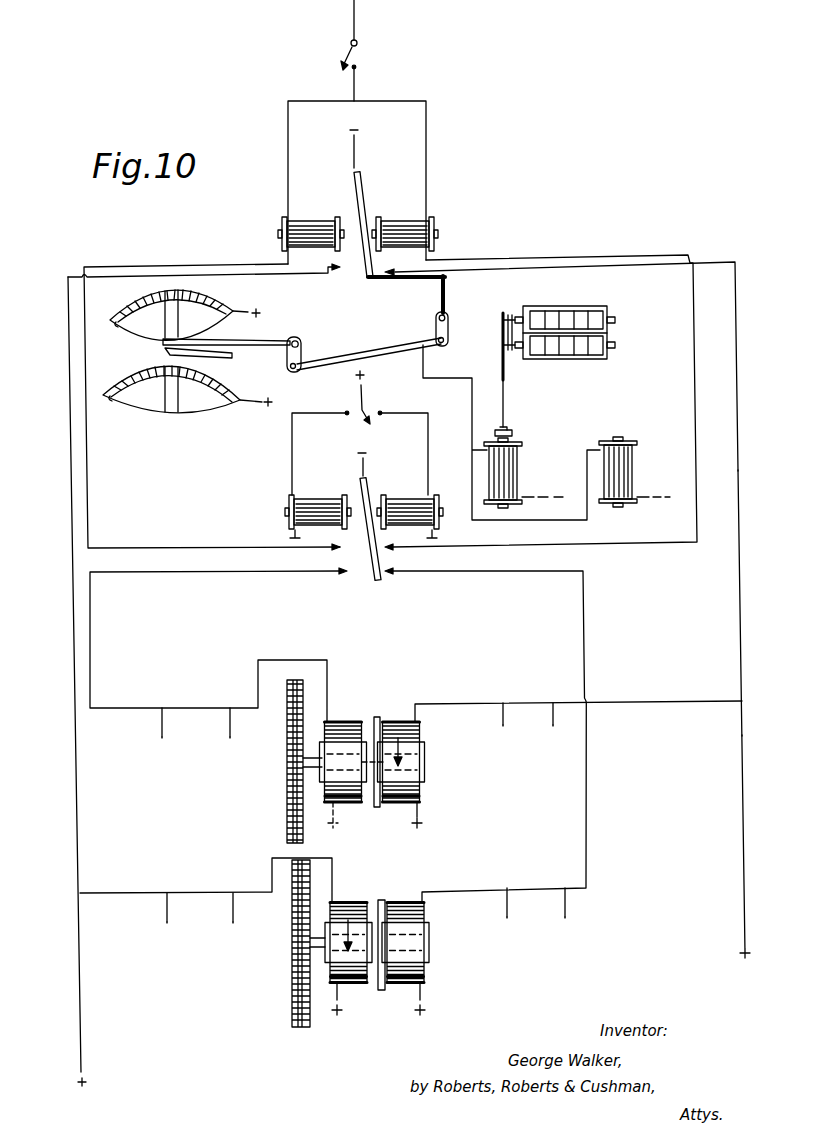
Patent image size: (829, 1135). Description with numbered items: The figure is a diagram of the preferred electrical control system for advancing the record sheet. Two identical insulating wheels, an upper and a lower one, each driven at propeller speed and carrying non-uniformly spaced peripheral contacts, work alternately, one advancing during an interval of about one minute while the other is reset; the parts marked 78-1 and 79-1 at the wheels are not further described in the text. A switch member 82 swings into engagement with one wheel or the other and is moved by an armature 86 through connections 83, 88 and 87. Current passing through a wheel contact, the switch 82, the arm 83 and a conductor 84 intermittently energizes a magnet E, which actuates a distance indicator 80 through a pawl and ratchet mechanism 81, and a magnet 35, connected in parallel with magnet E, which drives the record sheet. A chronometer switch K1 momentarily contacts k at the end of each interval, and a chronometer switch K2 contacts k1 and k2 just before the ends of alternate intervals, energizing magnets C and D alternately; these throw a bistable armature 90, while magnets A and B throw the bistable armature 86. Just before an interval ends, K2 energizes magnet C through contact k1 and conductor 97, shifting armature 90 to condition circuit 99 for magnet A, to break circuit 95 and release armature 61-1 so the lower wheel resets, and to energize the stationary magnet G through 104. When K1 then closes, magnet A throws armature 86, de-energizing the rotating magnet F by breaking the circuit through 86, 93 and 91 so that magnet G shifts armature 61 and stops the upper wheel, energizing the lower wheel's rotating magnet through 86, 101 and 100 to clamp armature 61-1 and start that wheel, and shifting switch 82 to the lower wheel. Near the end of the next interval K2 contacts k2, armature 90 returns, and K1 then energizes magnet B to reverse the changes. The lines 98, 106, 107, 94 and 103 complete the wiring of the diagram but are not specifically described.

The magnet 35 is at (628, 478).
The armature 61 is at (380, 716).
The armature 61-1 is at (384, 900).
The lens frame 78-1 is at (118, 325).
The lens frame 79-1 is at (112, 398).
The distance indicator 80 is at (596, 306).
The pawl and ratchet mechanism 81 is at (507, 415).
The switch member 82 is at (292, 335).
The arm 83 is at (336, 358).
The conductor 84 is at (448, 378).
The armature 86 is at (365, 194).
The connection 87 is at (420, 279).
The connection 88 is at (447, 302).
The armature 90 is at (365, 586).
The circuit 91 is at (625, 702).
The circuit 93 is at (740, 470).
The conductor 94 is at (743, 735).
The circuit 95 is at (590, 805).
The conductor 97 is at (292, 458).
The conductor 98 is at (400, 100).
The circuit 99 is at (182, 264).
The circuit 100 is at (133, 893).
The circuit 101 is at (73, 706).
The conductor 103 is at (78, 962).
The circuit 104 is at (92, 668).
The conductor 106 is at (428, 456).
The conductor 107 is at (585, 255).
The magnet A is at (302, 225).
The magnet B is at (410, 225).
The magnet C is at (316, 502).
The magnet D is at (410, 502).
The magnet E is at (516, 480).
The rotating magnet F is at (410, 770).
The stationary magnet G is at (345, 805).
The chronometer switch K1 is at (356, 50).
The chronometer switch K2 is at (366, 413).
The contact k is at (356, 67).
The contact k1 is at (341, 402).
The contact k2 is at (381, 416).